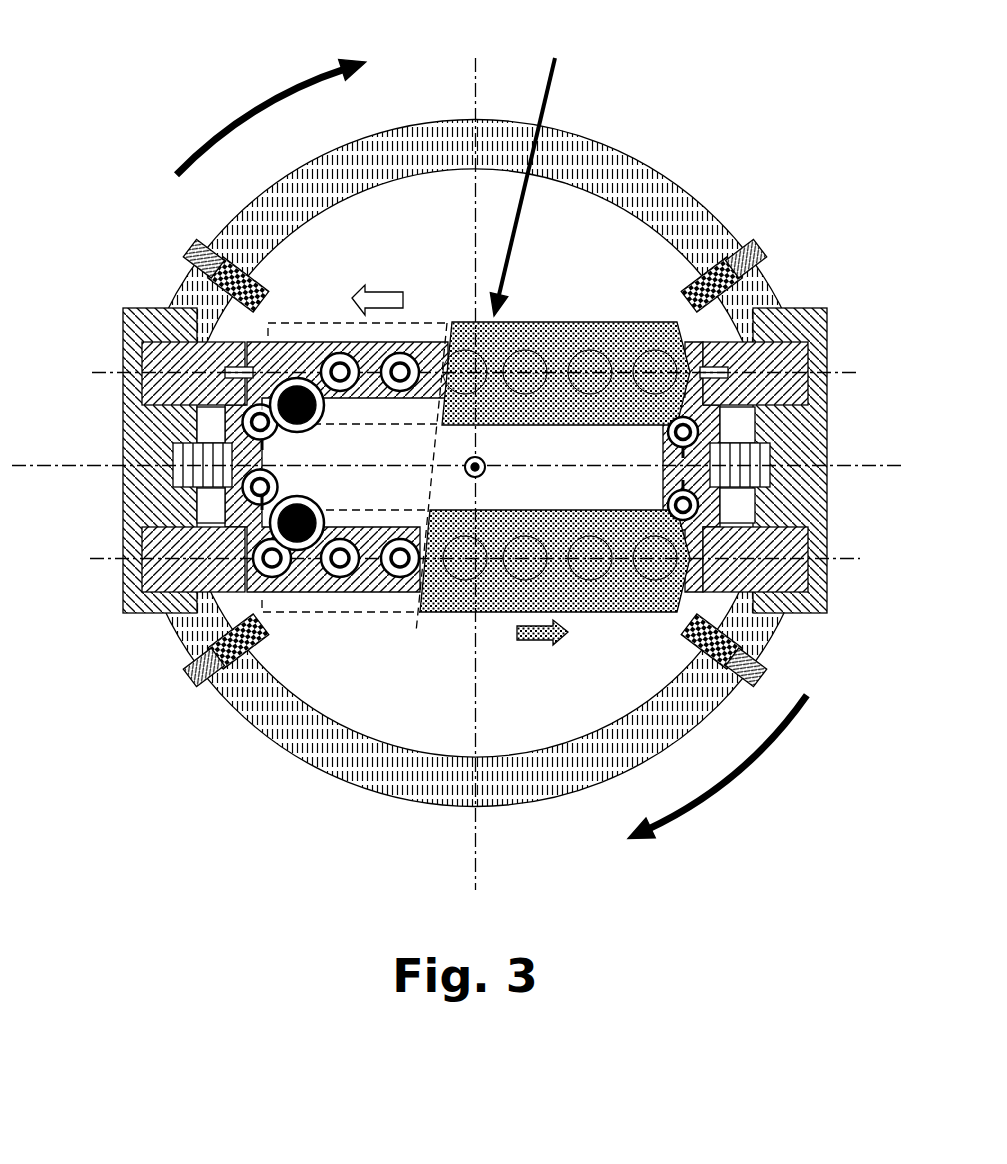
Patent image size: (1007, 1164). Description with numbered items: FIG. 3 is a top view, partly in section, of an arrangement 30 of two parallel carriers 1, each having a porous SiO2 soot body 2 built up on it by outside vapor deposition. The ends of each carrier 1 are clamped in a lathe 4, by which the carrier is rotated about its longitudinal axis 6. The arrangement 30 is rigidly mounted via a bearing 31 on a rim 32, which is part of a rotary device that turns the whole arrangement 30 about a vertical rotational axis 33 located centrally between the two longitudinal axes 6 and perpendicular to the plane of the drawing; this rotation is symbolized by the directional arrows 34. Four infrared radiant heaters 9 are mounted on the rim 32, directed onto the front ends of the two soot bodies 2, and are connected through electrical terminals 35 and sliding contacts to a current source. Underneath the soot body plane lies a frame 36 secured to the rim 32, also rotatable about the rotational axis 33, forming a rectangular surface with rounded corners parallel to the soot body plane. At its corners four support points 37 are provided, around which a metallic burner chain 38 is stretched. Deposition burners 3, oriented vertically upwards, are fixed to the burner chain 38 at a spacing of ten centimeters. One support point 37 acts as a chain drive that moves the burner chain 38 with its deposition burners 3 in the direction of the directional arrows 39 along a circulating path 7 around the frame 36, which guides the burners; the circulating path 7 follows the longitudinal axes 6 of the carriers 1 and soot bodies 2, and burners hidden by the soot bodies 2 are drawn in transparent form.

The carrier 1 is at (765, 342).
The soot body 2 is at (637, 343).
The deposition burner 3 is at (522, 370).
The lathe 4 is at (773, 363).
The longitudinal axis 6 is at (790, 382).
The circulating path 7 is at (345, 578).
The infrared radiant heater 9 is at (235, 257).
The arrangement 30 is at (534, 167).
The bearing 31 is at (143, 420).
The rim 32 is at (535, 777).
The rotational axis 33 is at (473, 478).
The directional arrow 34 is at (228, 120).
The electrical terminal 35 is at (195, 256).
The frame 36 is at (383, 585).
The support point 37 is at (298, 378).
The burner chain 38 is at (552, 365).
The directional arrow 39 is at (390, 288).